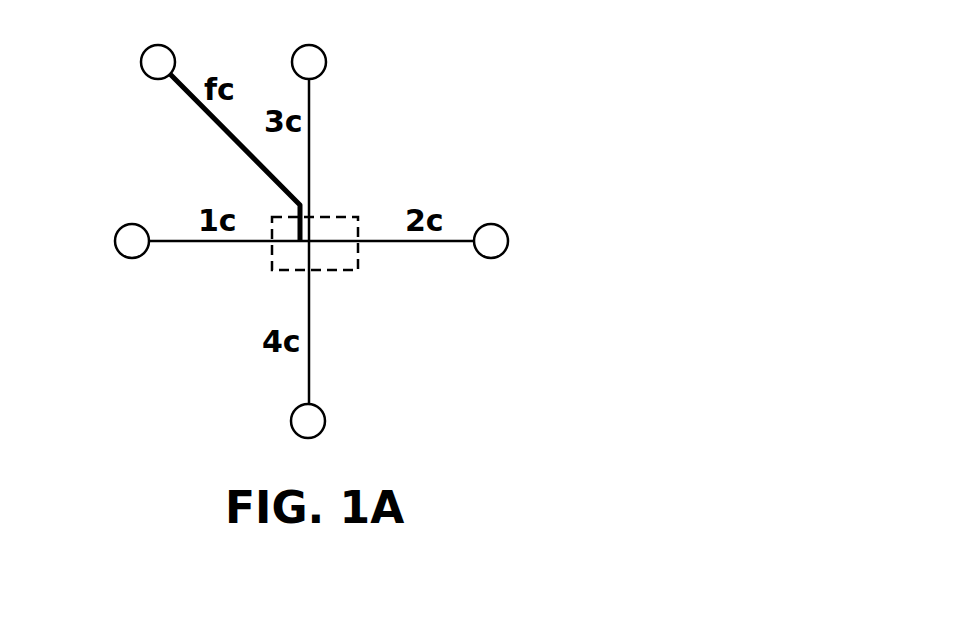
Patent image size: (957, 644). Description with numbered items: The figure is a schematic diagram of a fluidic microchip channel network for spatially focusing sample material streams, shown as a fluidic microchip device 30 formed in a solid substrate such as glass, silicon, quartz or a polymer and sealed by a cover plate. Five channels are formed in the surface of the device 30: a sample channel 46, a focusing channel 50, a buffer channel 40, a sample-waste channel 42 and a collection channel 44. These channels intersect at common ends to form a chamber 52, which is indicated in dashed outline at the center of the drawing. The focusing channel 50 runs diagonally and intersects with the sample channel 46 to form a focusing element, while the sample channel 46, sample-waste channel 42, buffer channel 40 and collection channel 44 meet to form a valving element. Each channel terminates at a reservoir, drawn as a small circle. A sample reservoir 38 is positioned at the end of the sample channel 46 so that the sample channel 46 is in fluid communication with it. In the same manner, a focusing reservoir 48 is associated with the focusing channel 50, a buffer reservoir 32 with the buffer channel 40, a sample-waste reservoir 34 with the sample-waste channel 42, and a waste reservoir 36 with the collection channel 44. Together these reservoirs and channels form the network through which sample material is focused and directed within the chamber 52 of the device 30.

The fluidic microchip device 30 is at (738, 200).
The buffer reservoir 32 is at (327, 60).
The sample-waste reservoir 34 is at (508, 243).
The waste reservoir 36 is at (326, 421).
The sample reservoir 38 is at (120, 255).
The buffer channel 40 is at (311, 125).
The sample-waste channel 42 is at (442, 243).
The collection channel 44 is at (311, 375).
The sample channel 46 is at (178, 243).
The focusing reservoir 48 is at (146, 48).
The focusing channel 50 is at (186, 94).
The chamber 52 is at (338, 210).